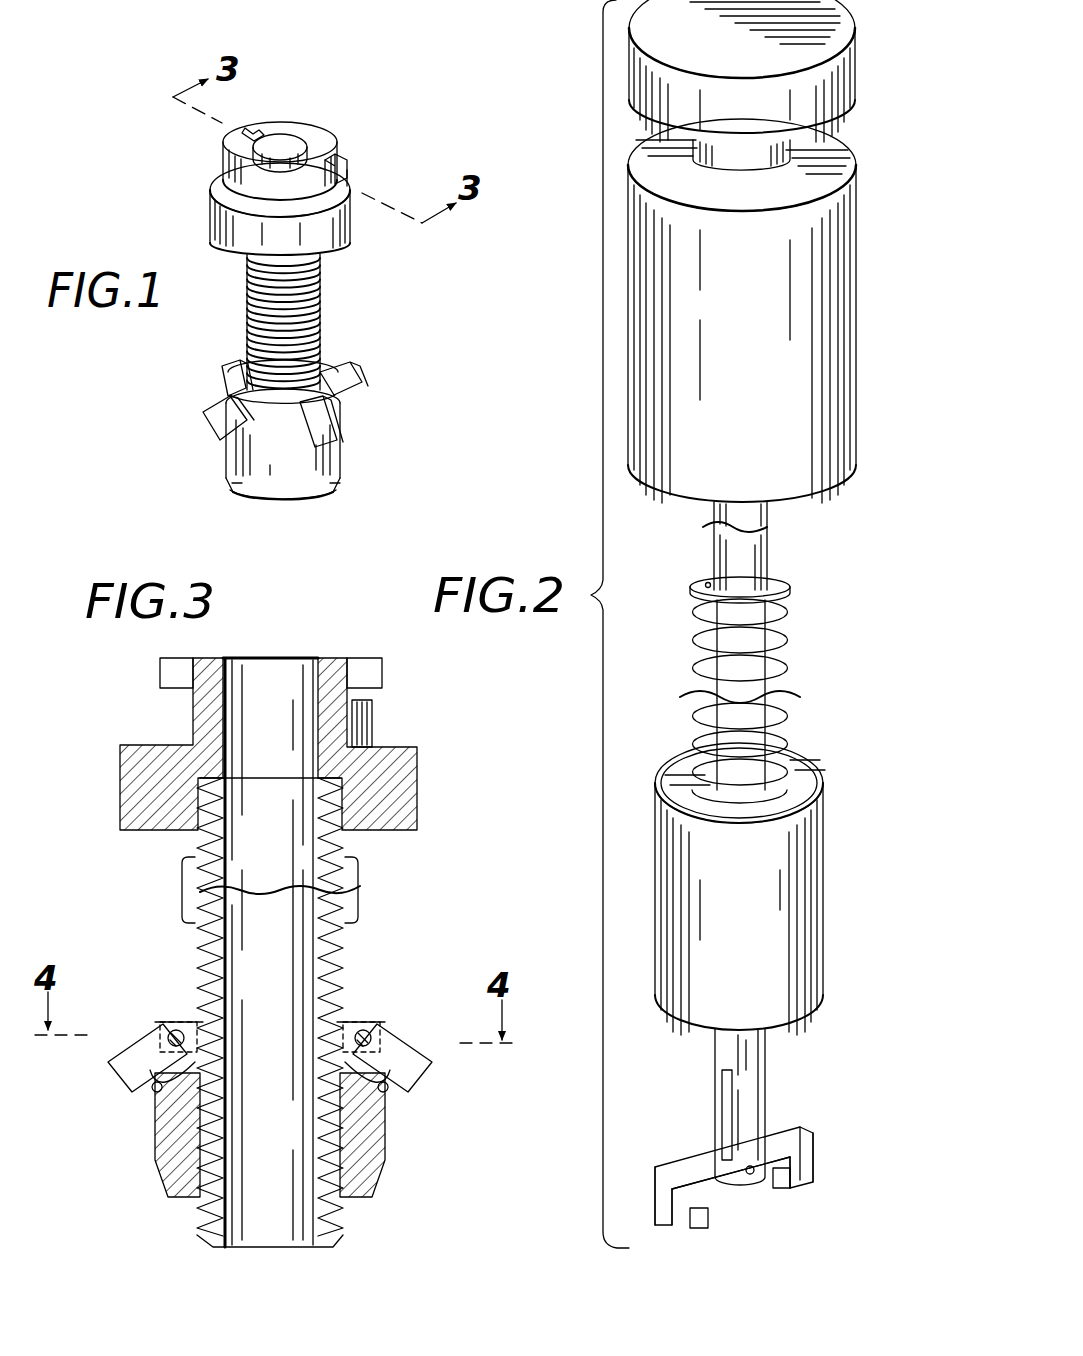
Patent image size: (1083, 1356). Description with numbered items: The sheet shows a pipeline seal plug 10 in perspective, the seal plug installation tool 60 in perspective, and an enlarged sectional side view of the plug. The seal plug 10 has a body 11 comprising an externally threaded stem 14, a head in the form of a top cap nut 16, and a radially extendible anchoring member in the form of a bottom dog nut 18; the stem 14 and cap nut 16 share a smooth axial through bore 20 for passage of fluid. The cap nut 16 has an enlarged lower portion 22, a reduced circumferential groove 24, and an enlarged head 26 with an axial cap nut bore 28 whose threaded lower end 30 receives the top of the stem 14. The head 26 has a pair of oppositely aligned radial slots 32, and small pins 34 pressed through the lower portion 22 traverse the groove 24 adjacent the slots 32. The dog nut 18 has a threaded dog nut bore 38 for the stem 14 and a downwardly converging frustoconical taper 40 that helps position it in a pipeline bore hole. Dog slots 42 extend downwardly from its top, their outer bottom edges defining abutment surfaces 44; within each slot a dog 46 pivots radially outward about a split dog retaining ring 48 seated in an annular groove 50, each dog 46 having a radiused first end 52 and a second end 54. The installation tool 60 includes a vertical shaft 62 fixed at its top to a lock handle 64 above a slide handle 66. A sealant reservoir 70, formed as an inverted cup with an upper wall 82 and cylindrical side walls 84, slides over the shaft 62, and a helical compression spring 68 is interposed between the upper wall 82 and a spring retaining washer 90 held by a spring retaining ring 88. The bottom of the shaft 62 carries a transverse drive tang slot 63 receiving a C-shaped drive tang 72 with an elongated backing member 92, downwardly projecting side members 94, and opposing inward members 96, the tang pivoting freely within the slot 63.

In FIG. 1, the seal plug 10 is at (363, 113).
In FIG. 1, the body 11 is at (208, 240).
In FIG. 3, the body 11 is at (268, 757).
In FIG. 1, the stem 14 is at (325, 286).
In FIG. 3, the stem 14 is at (352, 940).
In FIG. 1, the top cap nut 16 is at (348, 238).
In FIG. 3, the top cap nut 16 is at (125, 748).
In FIG. 1, the bottom dog nut 18 is at (348, 436).
In FIG. 3, the bottom dog nut 18 is at (279, 1135).
In FIG. 3, the through bore 20 is at (320, 1246).
In FIG. 1, the lower portion 22 is at (208, 214).
In FIG. 3, the lower portion 22 is at (418, 782).
In FIG. 1, the circumferential groove 24 is at (240, 190).
In FIG. 3, the circumferential groove 24 is at (192, 710).
In FIG. 1, the head 26 is at (298, 125).
In FIG. 3, the head 26 is at (383, 672).
In FIG. 1, the cap nut bore 28 is at (281, 135).
In FIG. 3, the cap nut bore 28 is at (310, 682).
In FIG. 3, the lower end 30 is at (203, 830).
In FIG. 1, the radial slots 32 is at (250, 130).
In FIG. 1, the pins 34 is at (345, 184).
In FIG. 3, the pins 34 is at (372, 716).
In FIG. 3, the dog nut bore 38 is at (205, 1202).
In FIG. 1, the frustoconical taper 40 is at (340, 480).
In FIG. 3, the frustoconical taper 40 is at (156, 1186).
In FIG. 1, the dog slots 42 is at (228, 388).
In FIG. 3, the dog slots 42 is at (273, 1026).
In FIG. 3, the abutment surfaces 44 is at (150, 1090).
In FIG. 1, the dogs 46 is at (222, 370).
In FIG. 3, the dogs 46 is at (430, 1040).
In FIG. 3, the split dog retaining ring 48 is at (176, 1030).
In FIG. 3, the annular groove 50 is at (178, 1030).
In FIG. 3, the first end 52 is at (156, 1090).
In FIG. 3, the second end 54 is at (115, 1085).
In FIG. 2, the installation tool 60 is at (762, 295).
In FIG. 2, the shaft 62 is at (770, 552).
In FIG. 2, the drive tang slot 63 is at (724, 1098).
In FIG. 2, the lock handle 64 is at (852, 60).
In FIG. 2, the slide handle 66 is at (852, 197).
In FIG. 2, the compression spring 68 is at (788, 647).
In FIG. 2, the sealant reservoir 70 is at (763, 874).
In FIG. 2, the drive tang 72 is at (735, 1139).
In FIG. 2, the upper wall 82 is at (803, 758).
In FIG. 2, the side walls 84 is at (826, 962).
In FIG. 2, the spring retaining ring 88 is at (705, 586).
In FIG. 2, the spring retaining washer 90 is at (748, 575).
In FIG. 2, the backing member 92 is at (777, 1128).
In FIG. 2, the side members 94 is at (815, 1168).
In FIG. 2, the inward members 96 is at (698, 1228).